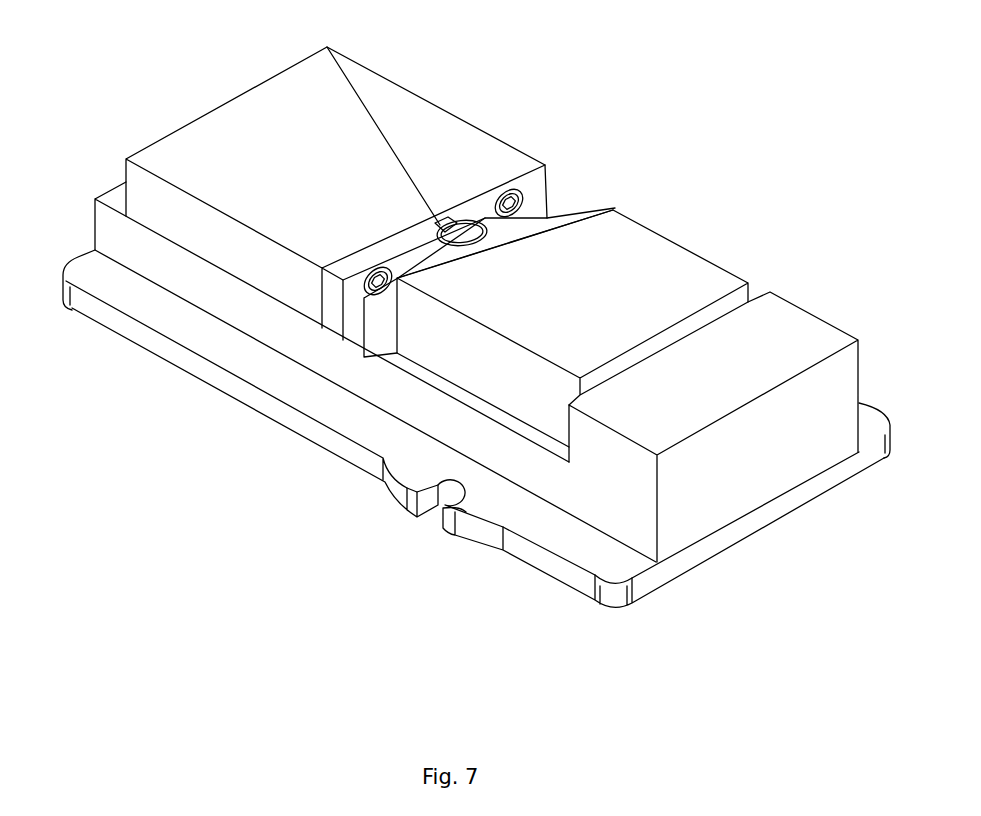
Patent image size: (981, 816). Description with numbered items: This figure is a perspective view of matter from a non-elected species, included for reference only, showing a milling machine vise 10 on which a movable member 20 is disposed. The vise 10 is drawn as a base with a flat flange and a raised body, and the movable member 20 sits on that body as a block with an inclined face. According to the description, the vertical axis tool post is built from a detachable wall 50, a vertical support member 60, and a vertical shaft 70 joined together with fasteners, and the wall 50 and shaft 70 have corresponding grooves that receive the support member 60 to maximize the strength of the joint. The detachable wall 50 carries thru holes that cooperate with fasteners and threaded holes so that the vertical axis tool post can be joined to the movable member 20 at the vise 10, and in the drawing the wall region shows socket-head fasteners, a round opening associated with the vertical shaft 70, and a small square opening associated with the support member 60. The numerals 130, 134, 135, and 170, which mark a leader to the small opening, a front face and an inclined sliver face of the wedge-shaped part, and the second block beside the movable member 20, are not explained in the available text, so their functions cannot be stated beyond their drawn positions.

The milling machine vise 10 is at (840, 432).
The movable member 20 is at (138, 193).
The detachable wall 50 is at (527, 168).
The vertical support member 60 is at (448, 217).
The vertical shaft 70 is at (466, 228).
The positioning element 130 is at (327, 47).
The front face of wedge 134 is at (380, 330).
The inclined face of wedge 135 is at (540, 224).
The movable wedge block 170 is at (668, 252).